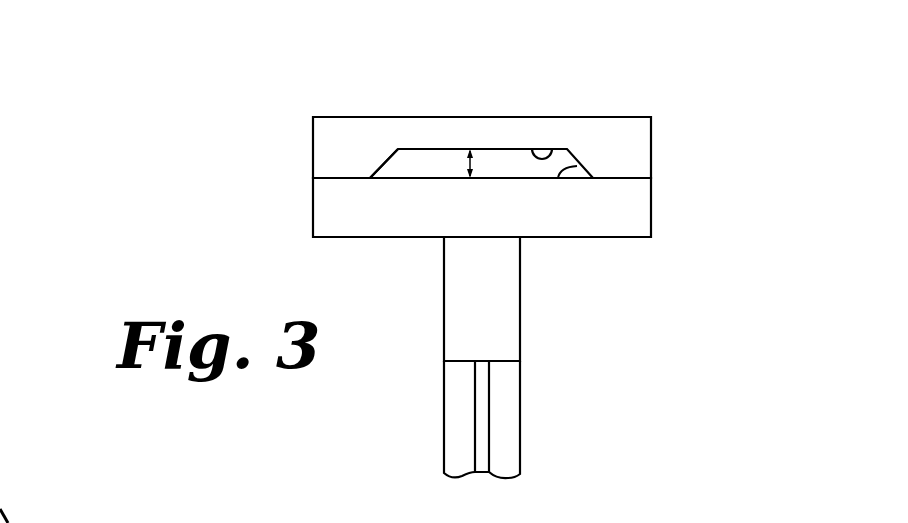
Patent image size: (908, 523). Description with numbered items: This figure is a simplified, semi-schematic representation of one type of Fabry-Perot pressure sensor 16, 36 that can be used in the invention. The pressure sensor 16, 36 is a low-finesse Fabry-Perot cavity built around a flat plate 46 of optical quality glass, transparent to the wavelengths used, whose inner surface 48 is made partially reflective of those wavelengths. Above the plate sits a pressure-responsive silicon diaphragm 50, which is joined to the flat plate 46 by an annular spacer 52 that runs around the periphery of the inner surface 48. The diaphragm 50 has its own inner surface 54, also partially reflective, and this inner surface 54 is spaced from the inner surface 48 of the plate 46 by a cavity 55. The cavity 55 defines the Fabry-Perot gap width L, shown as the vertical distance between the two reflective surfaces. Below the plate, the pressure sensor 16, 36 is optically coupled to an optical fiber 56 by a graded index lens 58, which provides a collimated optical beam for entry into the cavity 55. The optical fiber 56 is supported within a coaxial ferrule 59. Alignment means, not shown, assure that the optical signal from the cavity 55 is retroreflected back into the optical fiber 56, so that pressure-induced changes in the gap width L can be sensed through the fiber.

The Fabry-Perot pressure sensor 16 is at (735, 127).
The Fabry-Perot pressure sensor 36 is at (735, 127).
The flat plate 46 is at (630, 211).
The inner surface 48 is at (577, 166).
The pressure-responsive silicon diaphragm 50 is at (537, 120).
The annular spacer 52 is at (340, 165).
The inner surface 54 is at (557, 148).
The cavity 55 is at (428, 165).
The optical fiber 56 is at (482, 405).
The graded index lens 58 is at (505, 319).
The coaxial ferrule 59 is at (520, 445).
The Fabry-Perot gap width L is at (466, 171).